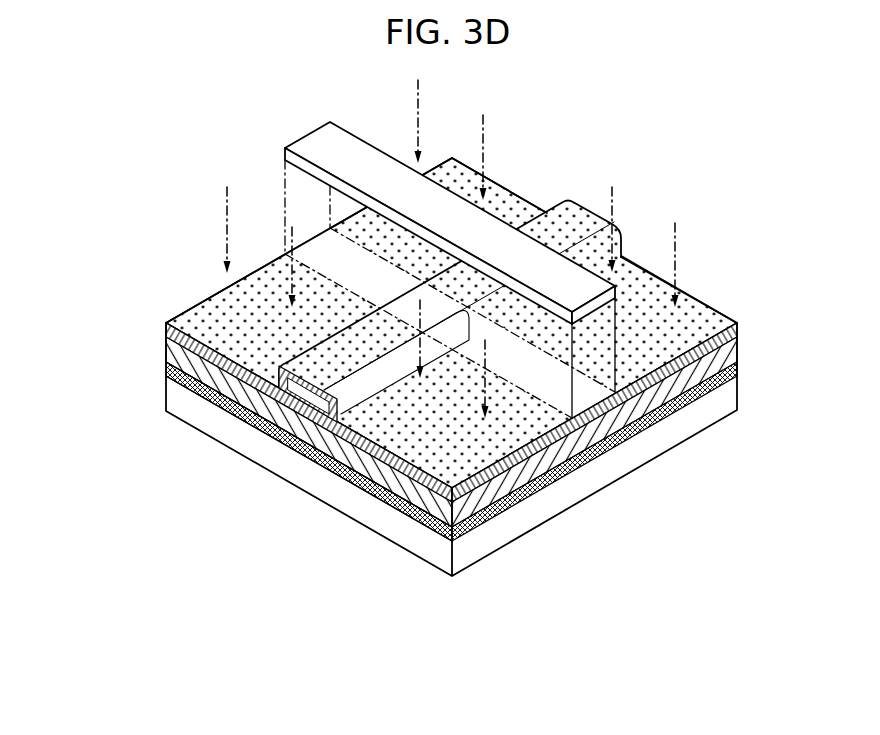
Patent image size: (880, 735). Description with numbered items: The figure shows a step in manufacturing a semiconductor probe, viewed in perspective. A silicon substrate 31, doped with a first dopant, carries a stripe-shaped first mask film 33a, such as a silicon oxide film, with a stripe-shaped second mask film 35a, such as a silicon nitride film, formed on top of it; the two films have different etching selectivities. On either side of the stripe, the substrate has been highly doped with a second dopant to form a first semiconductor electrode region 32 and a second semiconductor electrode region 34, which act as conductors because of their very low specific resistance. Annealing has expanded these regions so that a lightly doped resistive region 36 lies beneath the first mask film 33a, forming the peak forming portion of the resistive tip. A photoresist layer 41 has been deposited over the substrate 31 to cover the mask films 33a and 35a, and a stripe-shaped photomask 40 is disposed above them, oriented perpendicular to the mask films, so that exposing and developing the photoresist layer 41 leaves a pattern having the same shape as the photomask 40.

The silicon substrate 31 is at (610, 482).
The first semiconductor electrode region 32 is at (175, 348).
The first mask film 33a is at (260, 423).
The second semiconductor electrode region 34 is at (407, 508).
The second mask film 35a is at (237, 407).
The resistive region 36 is at (307, 437).
The photomask 40 is at (317, 137).
The photoresist layer 41 is at (164, 323).